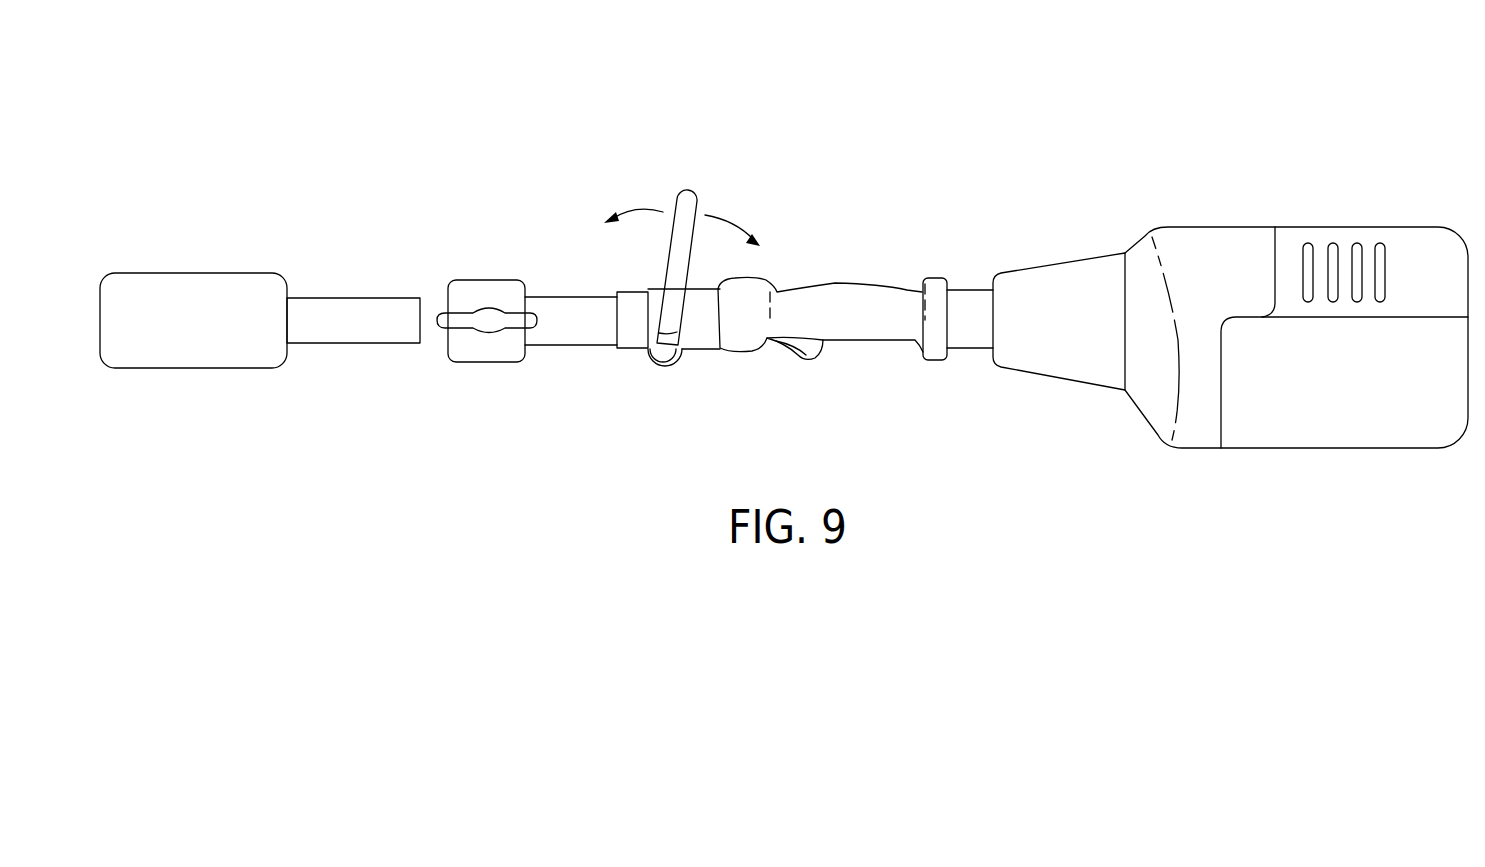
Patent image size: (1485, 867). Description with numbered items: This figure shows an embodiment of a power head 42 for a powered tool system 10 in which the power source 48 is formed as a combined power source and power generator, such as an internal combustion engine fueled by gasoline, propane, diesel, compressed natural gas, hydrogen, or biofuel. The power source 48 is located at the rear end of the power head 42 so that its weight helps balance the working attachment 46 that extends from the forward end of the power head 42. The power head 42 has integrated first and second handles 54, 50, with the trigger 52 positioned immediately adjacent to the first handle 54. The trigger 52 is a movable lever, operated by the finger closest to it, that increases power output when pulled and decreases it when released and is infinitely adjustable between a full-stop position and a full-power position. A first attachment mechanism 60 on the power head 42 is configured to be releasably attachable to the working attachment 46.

The blower apparatus 10 is at (562, 70).
The power head 42 is at (985, 190).
The working attachment 46 is at (347, 344).
The power source 48 is at (1355, 450).
The second handle 50 is at (885, 341).
The trigger 52 is at (793, 357).
The first handle 54 is at (691, 190).
The first attachment mechanism 60 is at (489, 333).